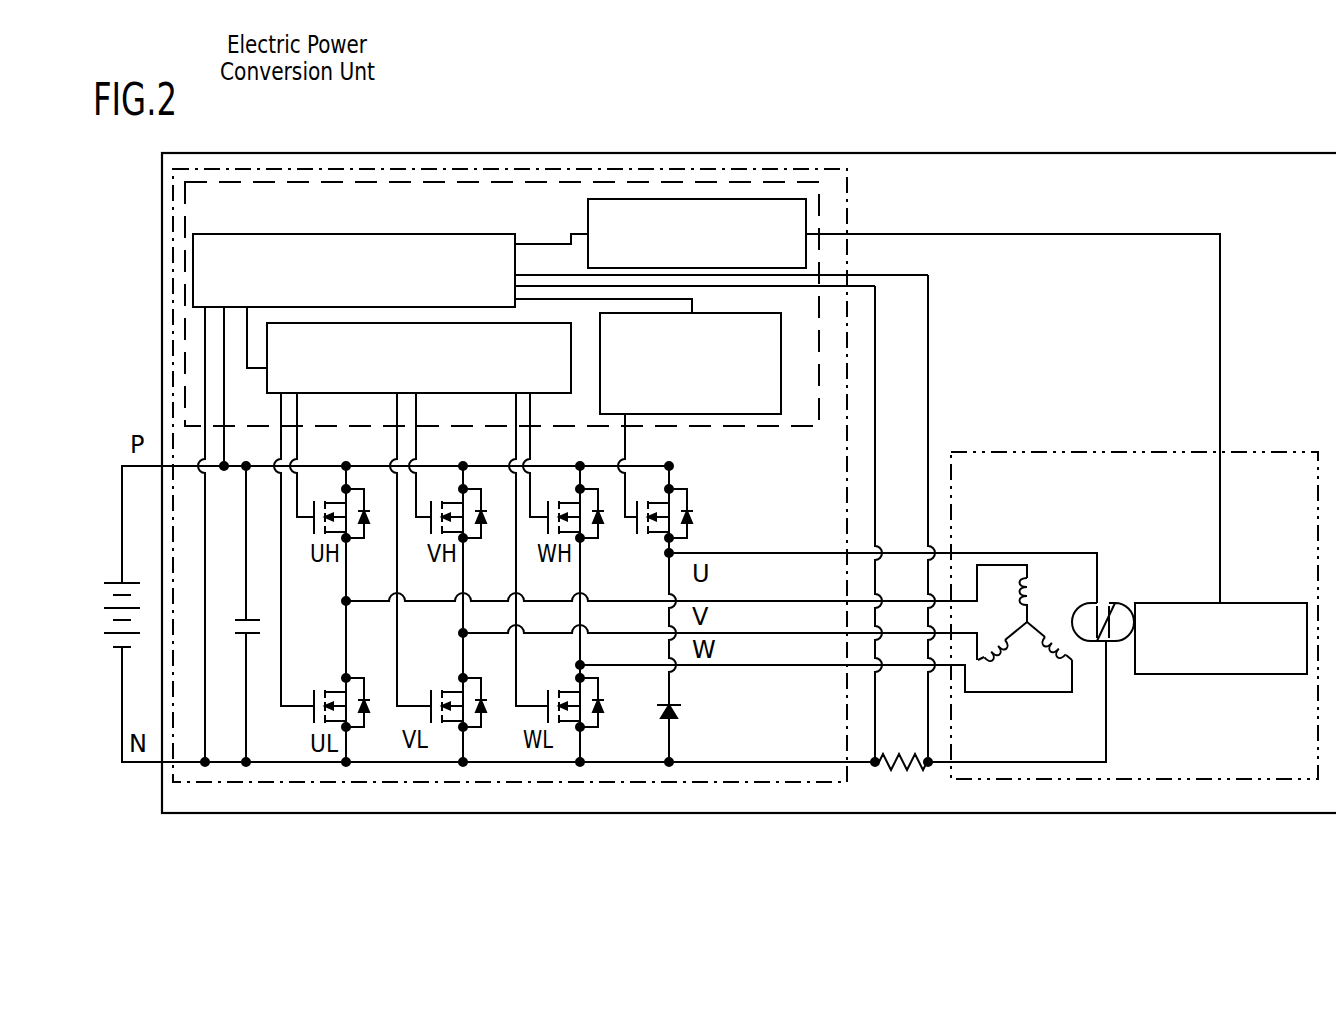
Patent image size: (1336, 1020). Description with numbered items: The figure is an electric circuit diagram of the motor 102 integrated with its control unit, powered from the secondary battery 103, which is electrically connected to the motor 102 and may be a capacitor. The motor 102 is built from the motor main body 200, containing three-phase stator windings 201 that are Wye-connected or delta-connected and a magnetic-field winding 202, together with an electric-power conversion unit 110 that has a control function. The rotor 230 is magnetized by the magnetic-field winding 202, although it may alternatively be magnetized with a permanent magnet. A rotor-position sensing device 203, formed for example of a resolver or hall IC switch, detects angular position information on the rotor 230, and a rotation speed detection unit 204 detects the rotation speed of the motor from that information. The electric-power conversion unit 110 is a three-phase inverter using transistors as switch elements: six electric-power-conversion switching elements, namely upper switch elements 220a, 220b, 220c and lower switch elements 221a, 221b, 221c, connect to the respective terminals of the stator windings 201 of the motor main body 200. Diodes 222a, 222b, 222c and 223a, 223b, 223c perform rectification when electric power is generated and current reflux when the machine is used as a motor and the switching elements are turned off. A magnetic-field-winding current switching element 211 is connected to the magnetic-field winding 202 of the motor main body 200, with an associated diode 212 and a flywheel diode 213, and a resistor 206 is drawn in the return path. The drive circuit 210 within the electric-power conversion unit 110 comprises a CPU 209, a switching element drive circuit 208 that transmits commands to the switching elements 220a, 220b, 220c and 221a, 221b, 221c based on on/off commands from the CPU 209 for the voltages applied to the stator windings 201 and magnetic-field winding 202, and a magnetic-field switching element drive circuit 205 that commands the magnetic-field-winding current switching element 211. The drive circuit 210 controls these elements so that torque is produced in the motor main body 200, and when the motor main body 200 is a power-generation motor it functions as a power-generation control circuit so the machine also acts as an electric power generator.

The motor 102 is at (1248, 153).
The secondary battery 103 is at (104, 622).
The electric-power conversion unit 110 is at (367, 168).
The motor main body 200 is at (1040, 452).
The stator windings 201 is at (1038, 570).
The magnetic-field winding 202 is at (1115, 603).
The rotor-position sensing device 203 is at (1248, 674).
The rotation speed detection unit 204 is at (722, 199).
The magnetic-field switching element drive circuit 205 is at (781, 348).
The resistor 206 is at (908, 767).
The switching element drive circuit 208 is at (267, 341).
The CPU 209 is at (335, 234).
The drive circuit 210 is at (502, 181).
The magnetic-field-winding current switching element 211 is at (642, 503).
The diode of magnetic field switching element 212 is at (697, 502).
The flywheel diode 213 is at (682, 707).
The electric-power-conversion switching element 220a is at (308, 522).
The electric-power-conversion switching element 220b is at (425, 522).
The electric-power-conversion switching element 220c is at (542, 522).
The electric-power-conversion switching element 221a is at (305, 717).
The electric-power-conversion switching element 221b is at (446, 722).
The electric-power-conversion switching element 221c is at (566, 727).
The diode 222a is at (368, 517).
The diode 222b is at (485, 517).
The diode 222c is at (602, 517).
The diode 223a is at (373, 713).
The diode 223b is at (490, 713).
The diode 223c is at (605, 713).
The rotor 230 is at (1100, 640).